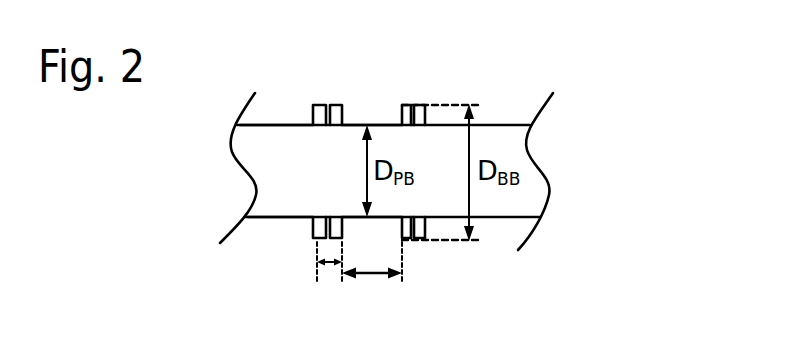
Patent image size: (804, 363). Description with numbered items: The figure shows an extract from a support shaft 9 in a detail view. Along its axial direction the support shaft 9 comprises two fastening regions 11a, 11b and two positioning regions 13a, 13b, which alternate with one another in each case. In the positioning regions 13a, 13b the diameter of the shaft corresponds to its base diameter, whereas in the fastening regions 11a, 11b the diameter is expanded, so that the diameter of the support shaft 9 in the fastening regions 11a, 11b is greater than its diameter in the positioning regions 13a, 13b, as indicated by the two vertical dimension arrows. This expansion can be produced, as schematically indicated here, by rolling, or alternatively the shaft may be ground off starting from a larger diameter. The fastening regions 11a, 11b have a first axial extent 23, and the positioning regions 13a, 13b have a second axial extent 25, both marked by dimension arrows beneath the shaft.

The support shaft 9 is at (533, 193).
The first fastening region 11a is at (318, 105).
The second fastening region 11b is at (417, 105).
The first positioning region 13a is at (287, 125).
The second positioning region 13b is at (362, 125).
The first axial extent 23 is at (320, 265).
The second axial extent 25 is at (375, 276).